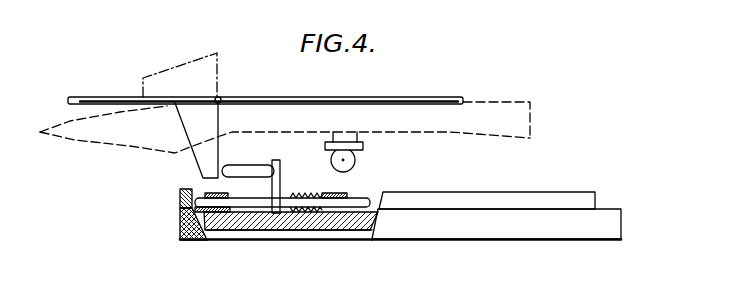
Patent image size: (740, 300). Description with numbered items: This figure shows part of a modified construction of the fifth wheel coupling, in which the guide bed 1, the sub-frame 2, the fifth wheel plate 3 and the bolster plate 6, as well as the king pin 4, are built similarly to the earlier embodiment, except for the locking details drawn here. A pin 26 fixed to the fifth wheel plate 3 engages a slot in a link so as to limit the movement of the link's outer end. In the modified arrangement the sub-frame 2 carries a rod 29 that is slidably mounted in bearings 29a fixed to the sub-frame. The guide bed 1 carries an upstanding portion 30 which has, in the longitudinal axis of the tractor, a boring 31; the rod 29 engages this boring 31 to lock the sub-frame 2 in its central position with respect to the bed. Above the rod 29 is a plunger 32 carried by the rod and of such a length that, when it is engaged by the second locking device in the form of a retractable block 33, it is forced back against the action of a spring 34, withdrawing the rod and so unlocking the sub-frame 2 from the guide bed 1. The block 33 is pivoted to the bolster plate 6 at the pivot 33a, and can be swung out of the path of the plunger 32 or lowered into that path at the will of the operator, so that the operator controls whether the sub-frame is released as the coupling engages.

The guide bed 1 is at (432, 227).
The sub-frame 2 is at (307, 226).
The fifth wheel plate 3 is at (102, 134).
The king pin 4 is at (337, 138).
The bolster plate 6 is at (88, 98).
The pin 26 is at (205, 238).
The rod 29 is at (232, 202).
The bearings 29a is at (342, 193).
The upstanding portion 30 is at (181, 216).
The boring 31 is at (180, 204).
The plunger 32 is at (248, 168).
The retractable block 33 is at (202, 160).
The pivot 33a is at (221, 97).
The spring 34 is at (287, 197).